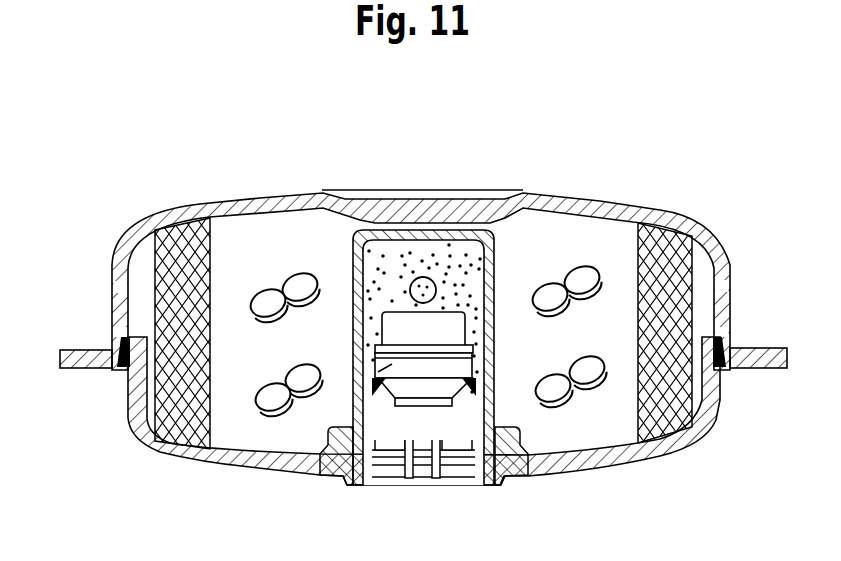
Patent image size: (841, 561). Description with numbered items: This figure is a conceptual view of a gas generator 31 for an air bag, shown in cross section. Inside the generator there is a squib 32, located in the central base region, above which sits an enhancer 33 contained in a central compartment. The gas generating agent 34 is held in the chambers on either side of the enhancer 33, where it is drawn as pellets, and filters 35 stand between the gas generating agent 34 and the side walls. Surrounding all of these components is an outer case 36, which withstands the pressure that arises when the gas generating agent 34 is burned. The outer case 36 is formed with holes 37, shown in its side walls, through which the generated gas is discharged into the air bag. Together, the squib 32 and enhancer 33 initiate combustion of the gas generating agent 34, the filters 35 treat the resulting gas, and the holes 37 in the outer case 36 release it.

The gas generator 31 is at (549, 103).
The squib 32 is at (362, 488).
The enhancer 33 is at (458, 257).
The gas generating agent 34 is at (297, 272).
The filters 35 is at (163, 364).
The outer case 36 is at (594, 200).
The holes 37 is at (112, 283).